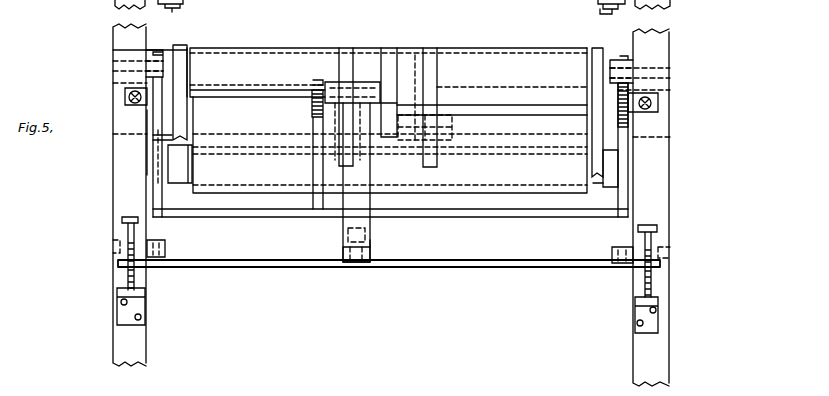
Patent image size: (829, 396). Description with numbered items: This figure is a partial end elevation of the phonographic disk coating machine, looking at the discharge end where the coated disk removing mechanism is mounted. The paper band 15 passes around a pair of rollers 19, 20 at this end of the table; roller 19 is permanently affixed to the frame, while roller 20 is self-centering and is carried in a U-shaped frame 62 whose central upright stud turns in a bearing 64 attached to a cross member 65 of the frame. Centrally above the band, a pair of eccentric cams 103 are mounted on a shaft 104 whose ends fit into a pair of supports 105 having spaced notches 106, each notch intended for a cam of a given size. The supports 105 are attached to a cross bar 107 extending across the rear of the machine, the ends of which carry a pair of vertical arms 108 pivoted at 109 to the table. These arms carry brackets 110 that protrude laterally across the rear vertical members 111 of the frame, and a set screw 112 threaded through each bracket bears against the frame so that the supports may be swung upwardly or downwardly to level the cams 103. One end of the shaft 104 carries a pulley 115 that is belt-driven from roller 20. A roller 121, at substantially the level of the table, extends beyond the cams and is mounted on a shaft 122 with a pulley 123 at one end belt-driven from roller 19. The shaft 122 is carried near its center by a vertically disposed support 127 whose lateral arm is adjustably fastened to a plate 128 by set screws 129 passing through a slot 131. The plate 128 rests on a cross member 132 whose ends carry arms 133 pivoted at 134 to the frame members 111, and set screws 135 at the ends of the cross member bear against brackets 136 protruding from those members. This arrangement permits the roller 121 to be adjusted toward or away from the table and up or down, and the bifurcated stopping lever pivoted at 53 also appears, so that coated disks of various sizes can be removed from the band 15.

The band 15 is at (276, 196).
The roller 19 is at (188, 50).
The roller 20 is at (593, 184).
The pivot point 53 is at (440, 127).
The U-shaped frame 62 is at (190, 175).
The bearing 64 is at (409, 97).
The cross member 65 is at (152, 135).
The eccentric cams 103 is at (348, 49).
The shaft 104 is at (510, 104).
The supports 105 is at (322, 86).
The notches 106 is at (628, 86).
The cross bar 107 is at (448, 218).
The vertical arms 108 is at (152, 190).
The pivot 109 is at (113, 66).
The brackets 110 is at (125, 98).
The rear vertical members 111 is at (113, 180).
The set screw 112 is at (125, 93).
The pulley 115 is at (594, 50).
The roller 121 is at (388, 49).
The shaft 122 is at (242, 92).
The pulley 123 is at (181, 48).
The vertically disposed support 127 is at (357, 200).
The plate 128 is at (343, 252).
The set screws 129 is at (347, 232).
The slot 131 is at (371, 243).
The cross member 132 is at (368, 268).
The arms 133 is at (155, 258).
The pivot 134 is at (118, 243).
The set screws 135 is at (122, 221).
The brackets 136 is at (117, 295).